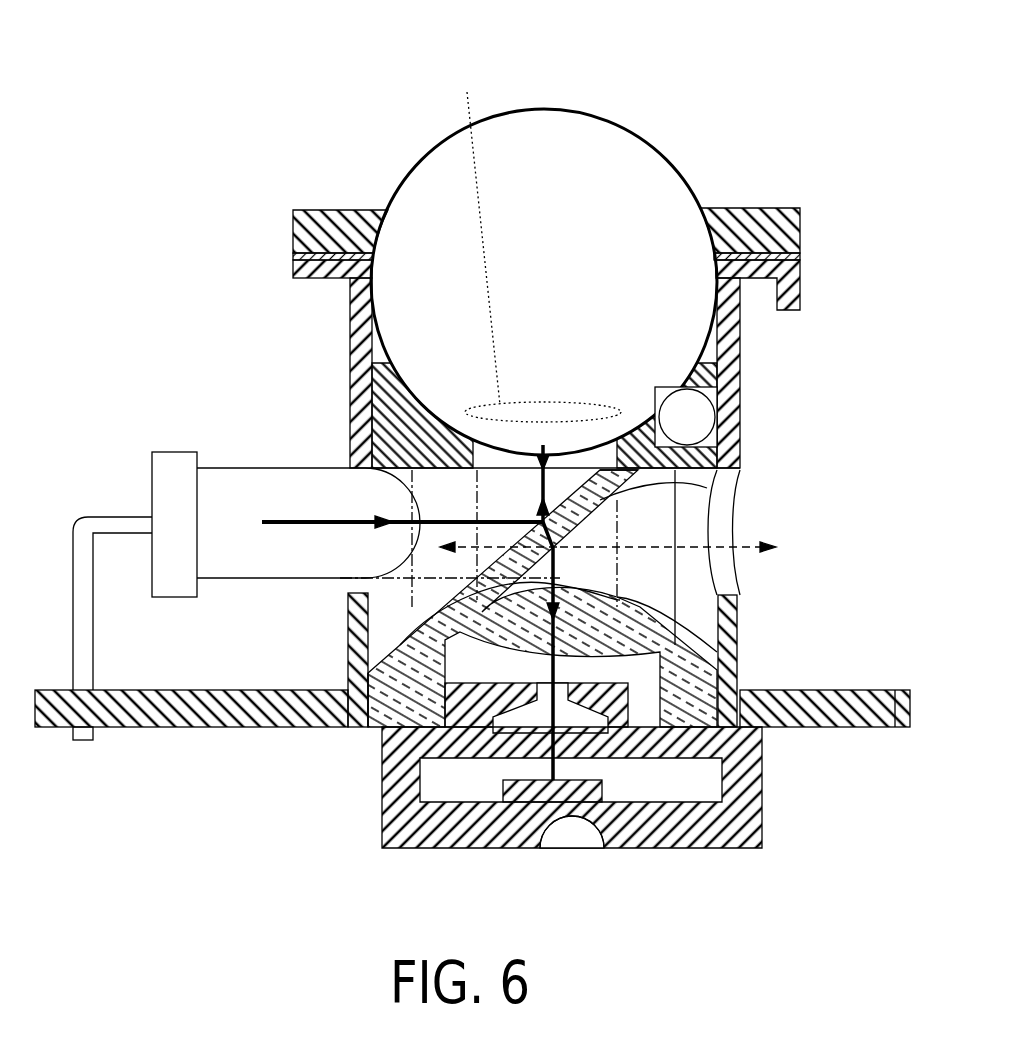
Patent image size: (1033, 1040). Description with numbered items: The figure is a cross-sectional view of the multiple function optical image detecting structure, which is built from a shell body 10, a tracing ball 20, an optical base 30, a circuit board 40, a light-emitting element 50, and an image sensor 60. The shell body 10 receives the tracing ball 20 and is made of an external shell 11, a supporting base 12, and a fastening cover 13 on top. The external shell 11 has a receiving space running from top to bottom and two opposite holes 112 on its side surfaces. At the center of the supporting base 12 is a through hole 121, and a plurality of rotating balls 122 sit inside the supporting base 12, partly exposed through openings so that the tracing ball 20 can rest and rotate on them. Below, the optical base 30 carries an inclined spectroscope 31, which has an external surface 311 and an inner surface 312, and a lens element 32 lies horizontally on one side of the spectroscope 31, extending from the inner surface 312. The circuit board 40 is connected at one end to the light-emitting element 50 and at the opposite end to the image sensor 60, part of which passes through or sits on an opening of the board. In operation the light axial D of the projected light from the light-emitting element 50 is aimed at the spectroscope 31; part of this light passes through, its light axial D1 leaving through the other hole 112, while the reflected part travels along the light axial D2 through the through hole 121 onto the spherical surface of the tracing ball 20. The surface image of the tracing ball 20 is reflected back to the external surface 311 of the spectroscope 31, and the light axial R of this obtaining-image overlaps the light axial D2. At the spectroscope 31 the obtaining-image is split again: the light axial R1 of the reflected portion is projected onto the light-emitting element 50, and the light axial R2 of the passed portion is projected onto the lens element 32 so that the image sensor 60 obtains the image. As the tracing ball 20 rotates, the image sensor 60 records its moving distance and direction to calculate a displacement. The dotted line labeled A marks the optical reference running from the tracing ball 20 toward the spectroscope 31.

The shell body 10 is at (880, 212).
The external shell 11 is at (740, 368).
The supporting base 12 is at (660, 462).
The fastening cover 13 is at (800, 213).
The tracing ball 20 is at (572, 106).
The optical base 30 is at (385, 708).
The spectroscope 31 is at (737, 520).
The lens element 32 is at (650, 598).
The circuit board 40 is at (57, 686).
The light-emitting element 50 is at (146, 493).
The image sensor 60 is at (716, 855).
The hole 112 is at (348, 598).
The through hole 121 is at (372, 445).
The rotating ball 122 is at (700, 412).
The external surface 311 is at (368, 648).
The inner surface 312 is at (620, 474).
The optical axis A is at (478, 233).
The light axial of the projected light D is at (352, 520).
The light axial of the passed light D1 is at (778, 548).
The light axial of the reflected light D2 is at (541, 494).
The light axial of the obtaining-image R is at (552, 440).
The light axial of the reflected obtaining-image R1 is at (440, 545).
The light axial of the passed obtaining-image R2 is at (555, 580).